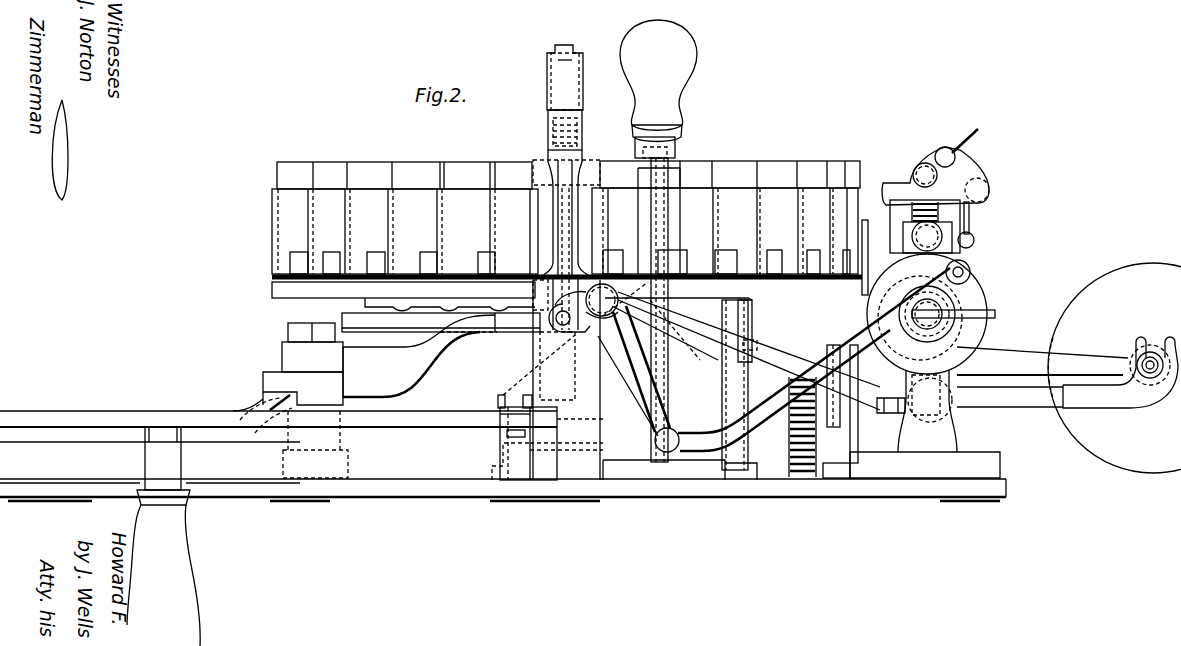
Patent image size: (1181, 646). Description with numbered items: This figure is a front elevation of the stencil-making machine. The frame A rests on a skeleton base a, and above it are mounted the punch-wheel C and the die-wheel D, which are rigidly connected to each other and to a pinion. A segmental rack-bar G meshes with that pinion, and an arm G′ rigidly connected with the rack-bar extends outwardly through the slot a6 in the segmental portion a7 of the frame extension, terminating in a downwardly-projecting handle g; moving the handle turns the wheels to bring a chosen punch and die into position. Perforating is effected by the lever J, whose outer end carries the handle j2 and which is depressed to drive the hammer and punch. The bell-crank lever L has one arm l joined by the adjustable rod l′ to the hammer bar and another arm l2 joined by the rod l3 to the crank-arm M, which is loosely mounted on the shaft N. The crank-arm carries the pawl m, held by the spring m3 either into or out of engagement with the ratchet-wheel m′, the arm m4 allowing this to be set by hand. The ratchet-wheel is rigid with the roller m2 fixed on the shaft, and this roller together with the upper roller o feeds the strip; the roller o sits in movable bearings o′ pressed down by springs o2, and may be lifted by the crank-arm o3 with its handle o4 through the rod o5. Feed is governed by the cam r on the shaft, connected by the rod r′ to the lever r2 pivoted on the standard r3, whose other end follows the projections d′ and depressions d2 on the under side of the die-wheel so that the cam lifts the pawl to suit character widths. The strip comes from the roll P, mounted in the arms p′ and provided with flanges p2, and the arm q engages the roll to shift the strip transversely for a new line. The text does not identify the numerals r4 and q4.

The frame A is at (666, 520).
The base a is at (425, 500).
The slot a6 is at (100, 430).
The segmental portion a7 is at (172, 441).
The handle g is at (197, 600).
The arm G′ is at (262, 395).
The segmental rack-bar G is at (480, 340).
The projections d′ is at (406, 320).
The die-wheel D is at (272, 292).
The punch-wheel C is at (551, 217).
The rod l′ is at (567, 218).
The handle j2 is at (680, 80).
The lever J is at (668, 158).
The arm l is at (556, 322).
The bell-crank lever L is at (649, 367).
The arm l2 is at (632, 388).
The rod l3 is at (814, 359).
The cam r is at (862, 300).
The standard r3 is at (722, 393).
The depressions d2 is at (712, 302).
The spring r4 is at (792, 427).
The rod r′ is at (862, 392).
The lever r2 is at (880, 410).
The pedestal q4 is at (950, 410).
The crank-arm M is at (976, 296).
The ratchet-wheel m′ is at (980, 306).
The shaft N is at (996, 318).
The roller m2 is at (972, 336).
The spring m3 is at (971, 264).
The pawl m is at (975, 240).
The arm m4 is at (970, 214).
The roller o is at (903, 236).
The bearings o′ is at (910, 226).
The springs o2 is at (912, 182).
The crank-arm o3 is at (945, 152).
The handle o4 is at (982, 132).
The rod o5 is at (976, 176).
The arm q is at (1034, 380).
The arms p′ is at (1113, 405).
The roll P is at (1134, 352).
The flanges p2 is at (1128, 265).